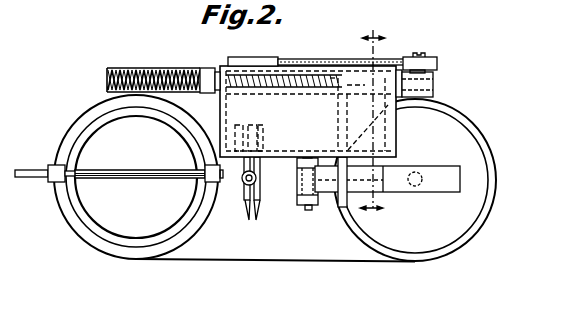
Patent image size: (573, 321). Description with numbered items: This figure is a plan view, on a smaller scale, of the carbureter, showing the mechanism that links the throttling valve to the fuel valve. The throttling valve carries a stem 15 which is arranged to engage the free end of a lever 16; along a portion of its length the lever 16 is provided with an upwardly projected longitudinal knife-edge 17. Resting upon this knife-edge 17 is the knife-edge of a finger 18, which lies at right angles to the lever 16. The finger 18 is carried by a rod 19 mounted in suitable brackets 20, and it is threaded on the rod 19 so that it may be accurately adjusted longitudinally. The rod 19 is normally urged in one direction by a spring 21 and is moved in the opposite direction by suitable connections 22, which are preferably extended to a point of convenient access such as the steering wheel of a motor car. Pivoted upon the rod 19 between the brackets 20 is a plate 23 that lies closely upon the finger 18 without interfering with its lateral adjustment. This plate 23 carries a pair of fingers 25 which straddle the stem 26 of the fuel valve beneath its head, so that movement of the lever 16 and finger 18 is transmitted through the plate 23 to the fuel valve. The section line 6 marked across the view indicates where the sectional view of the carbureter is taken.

The section line 6— 6 is at (372, 128).
The stem 15 is at (419, 191).
The lever 16 is at (461, 181).
The knife-edge 17 is at (331, 182).
The finger 18 is at (343, 209).
The rod 19 is at (312, 68).
The brackets 20 is at (207, 68).
The spring 21 is at (148, 70).
The connections 22 is at (438, 63).
The plate 23 is at (290, 160).
The fingers 25 is at (255, 223).
The stem 26 is at (243, 183).